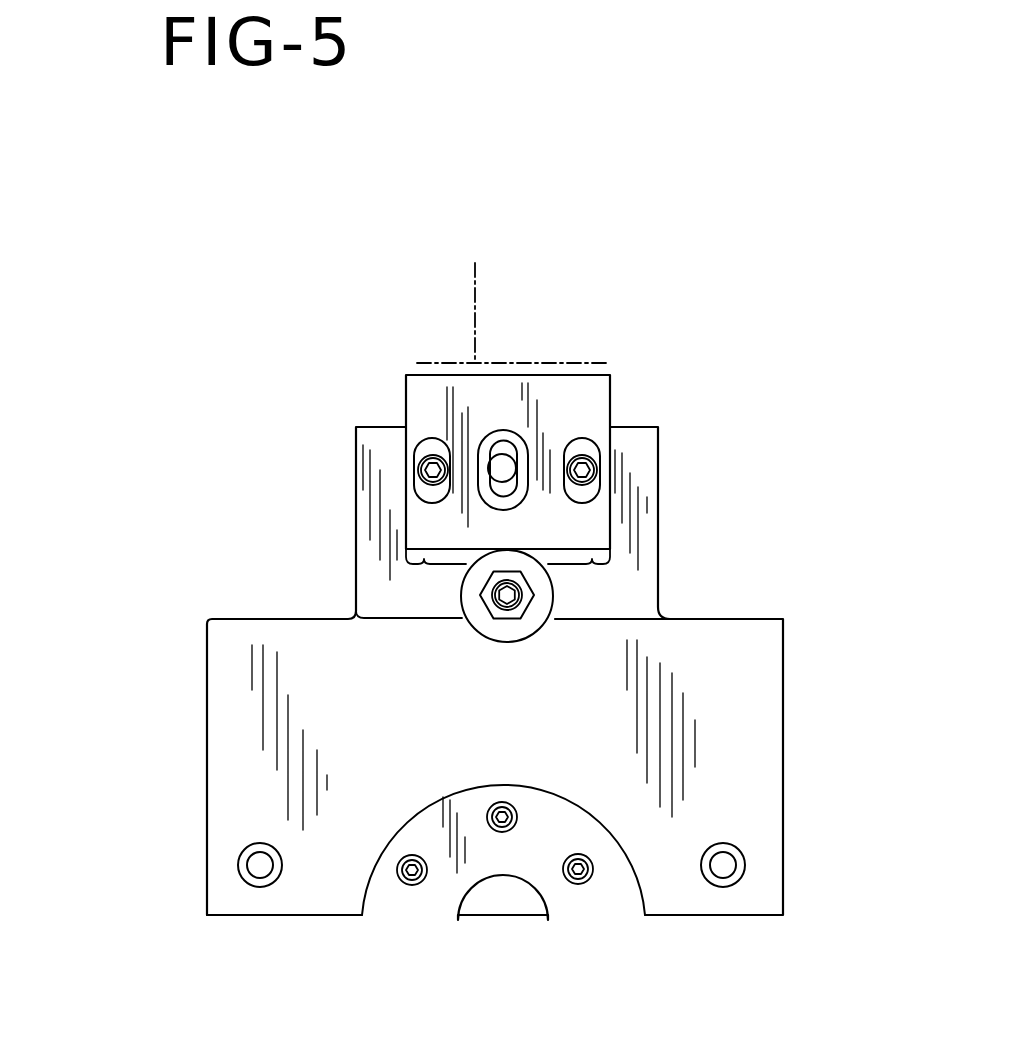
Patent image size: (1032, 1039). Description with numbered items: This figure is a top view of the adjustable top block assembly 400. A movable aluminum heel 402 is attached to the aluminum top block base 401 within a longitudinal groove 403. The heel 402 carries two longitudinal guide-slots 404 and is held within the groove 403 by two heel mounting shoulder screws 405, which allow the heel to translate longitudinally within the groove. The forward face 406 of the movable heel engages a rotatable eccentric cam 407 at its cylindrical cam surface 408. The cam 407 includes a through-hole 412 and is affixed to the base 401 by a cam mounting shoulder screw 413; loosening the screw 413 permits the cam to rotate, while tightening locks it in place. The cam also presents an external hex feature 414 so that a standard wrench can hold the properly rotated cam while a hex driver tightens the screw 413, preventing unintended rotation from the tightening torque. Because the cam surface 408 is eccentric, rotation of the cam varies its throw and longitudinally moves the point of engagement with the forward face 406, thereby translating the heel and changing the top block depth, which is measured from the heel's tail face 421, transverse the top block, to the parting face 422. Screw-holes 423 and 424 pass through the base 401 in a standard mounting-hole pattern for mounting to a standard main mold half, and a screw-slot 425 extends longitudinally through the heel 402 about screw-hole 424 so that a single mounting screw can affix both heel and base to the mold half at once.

The adjustable top block assembly 400 is at (292, 230).
The top block base 401 is at (357, 470).
The movable heel 402 is at (405, 406).
The longitudinal groove 403 is at (610, 530).
The longitudinal guide-slots 404 is at (435, 437).
The heel mounting shoulder screws 405 is at (420, 467).
The forward face 406 is at (610, 562).
The rotatable eccentric cam 407 is at (533, 580).
The cylindrical cam surface 408 is at (538, 602).
The through-hole 412 is at (497, 601).
The cam mounting shoulder screw 413 is at (281, 596).
The external hex feature 414 is at (492, 593).
The tail face 421 is at (463, 378).
The parting face 422 is at (595, 917).
The screw-holes 423 is at (243, 875).
The screw-hole 424 is at (513, 467).
The screw-slot 425 is at (500, 440).